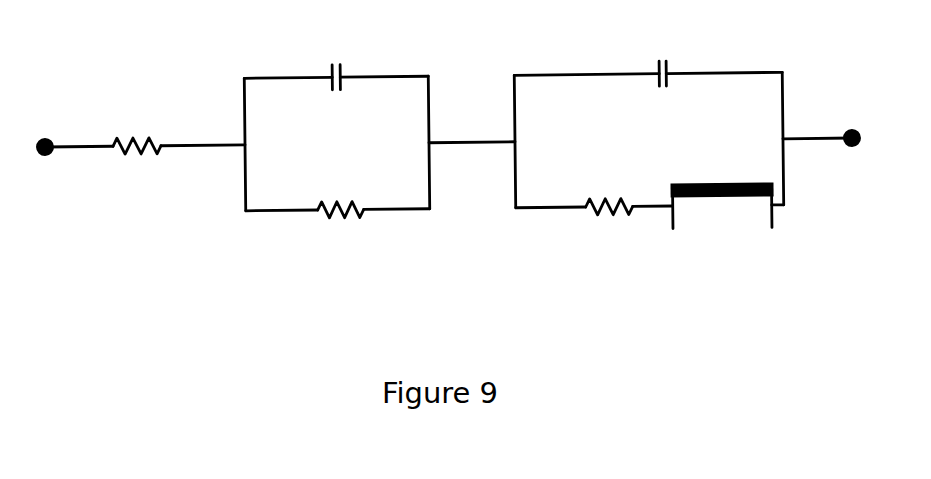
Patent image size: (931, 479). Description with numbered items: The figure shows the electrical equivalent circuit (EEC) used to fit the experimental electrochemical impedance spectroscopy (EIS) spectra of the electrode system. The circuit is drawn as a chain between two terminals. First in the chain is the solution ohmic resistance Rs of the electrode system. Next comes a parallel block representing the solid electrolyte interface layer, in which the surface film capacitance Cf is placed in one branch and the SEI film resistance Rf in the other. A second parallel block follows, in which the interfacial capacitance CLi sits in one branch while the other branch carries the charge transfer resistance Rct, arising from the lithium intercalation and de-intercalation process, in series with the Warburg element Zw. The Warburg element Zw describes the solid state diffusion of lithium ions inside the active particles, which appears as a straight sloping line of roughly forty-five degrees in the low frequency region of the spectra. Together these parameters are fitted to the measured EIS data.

The solution ohmic resistance Rs is at (136, 119).
The surface film capacitance Cf is at (339, 60).
The SEI film resistance Rf is at (341, 216).
The interfacial capacitance CLi is at (667, 57).
The charge transfer resistance Rct is at (609, 215).
The Warburg element Zw is at (722, 196).